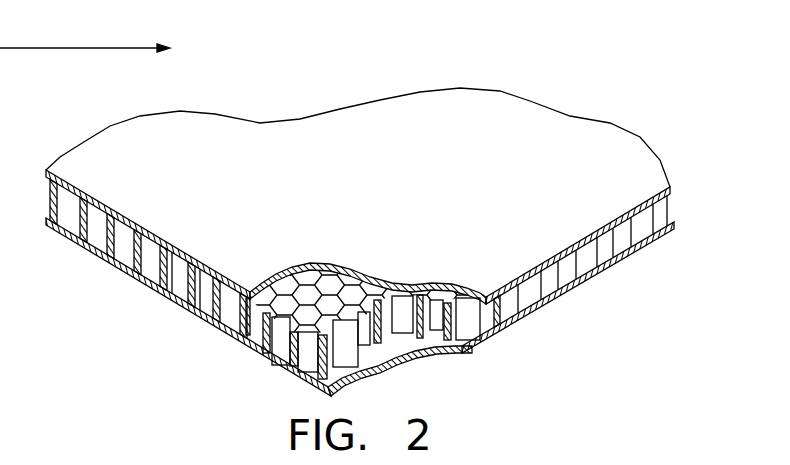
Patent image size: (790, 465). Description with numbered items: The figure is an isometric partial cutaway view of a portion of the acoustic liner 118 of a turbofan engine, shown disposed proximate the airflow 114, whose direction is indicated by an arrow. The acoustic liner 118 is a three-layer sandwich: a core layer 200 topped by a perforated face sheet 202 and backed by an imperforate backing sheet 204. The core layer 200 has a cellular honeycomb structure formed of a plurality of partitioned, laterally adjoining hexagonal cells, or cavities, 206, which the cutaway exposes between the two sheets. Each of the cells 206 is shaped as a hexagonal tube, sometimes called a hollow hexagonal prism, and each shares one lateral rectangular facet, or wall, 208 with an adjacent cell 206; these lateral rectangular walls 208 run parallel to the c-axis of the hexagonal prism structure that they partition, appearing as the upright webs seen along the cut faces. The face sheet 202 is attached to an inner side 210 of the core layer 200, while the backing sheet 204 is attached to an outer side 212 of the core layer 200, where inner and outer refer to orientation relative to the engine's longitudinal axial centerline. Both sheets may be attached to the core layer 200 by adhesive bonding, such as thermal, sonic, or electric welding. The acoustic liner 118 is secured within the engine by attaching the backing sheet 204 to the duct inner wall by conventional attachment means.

The airflow 114 is at (88, 48).
The acoustic liner 118 is at (517, 54).
The core layer 200 is at (658, 210).
The perforated face sheet 202 is at (313, 140).
The imperforate backing sheet 204 is at (648, 238).
The hexagonal cells 206 is at (317, 297).
The lateral rectangular wall 208 is at (472, 312).
The inner side of core layer 210 is at (150, 250).
The outer side of core layer 212 is at (197, 295).